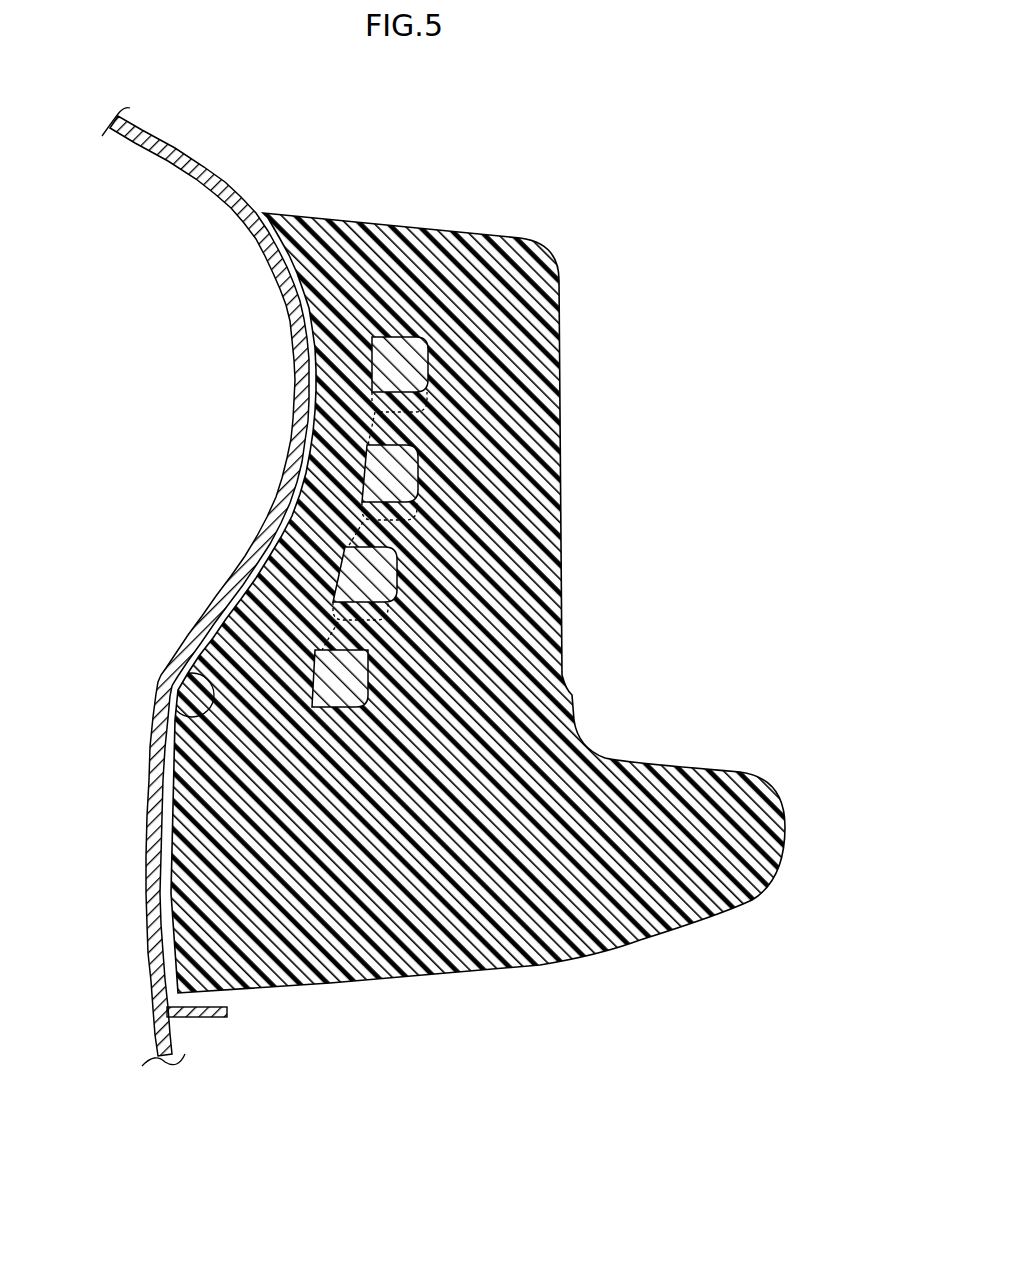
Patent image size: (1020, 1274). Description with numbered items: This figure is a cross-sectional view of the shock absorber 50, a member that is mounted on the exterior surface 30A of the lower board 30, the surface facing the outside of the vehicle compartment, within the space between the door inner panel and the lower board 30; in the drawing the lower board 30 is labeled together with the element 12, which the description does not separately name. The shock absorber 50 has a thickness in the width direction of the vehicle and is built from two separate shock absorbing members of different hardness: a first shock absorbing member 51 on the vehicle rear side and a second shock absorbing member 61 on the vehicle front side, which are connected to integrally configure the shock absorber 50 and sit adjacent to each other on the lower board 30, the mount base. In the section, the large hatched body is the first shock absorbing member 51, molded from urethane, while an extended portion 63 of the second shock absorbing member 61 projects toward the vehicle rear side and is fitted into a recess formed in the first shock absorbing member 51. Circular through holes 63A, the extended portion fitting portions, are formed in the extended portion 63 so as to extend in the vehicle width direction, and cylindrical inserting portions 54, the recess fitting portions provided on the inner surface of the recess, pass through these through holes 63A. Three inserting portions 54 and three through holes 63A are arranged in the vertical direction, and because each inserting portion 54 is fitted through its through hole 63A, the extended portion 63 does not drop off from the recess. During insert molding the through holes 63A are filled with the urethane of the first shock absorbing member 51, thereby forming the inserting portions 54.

The door trim 12 is at (197, 587).
The lower board 30 is at (212, 198).
The exterior surface 30A is at (192, 716).
The shock absorber 50 is at (424, 601).
The first shock absorbing member 51 is at (580, 250).
The inserting portions 54 is at (338, 612).
The second shock absorbing member 61 is at (402, 336).
The extended portion 63 is at (332, 677).
The through holes 63A is at (378, 612).